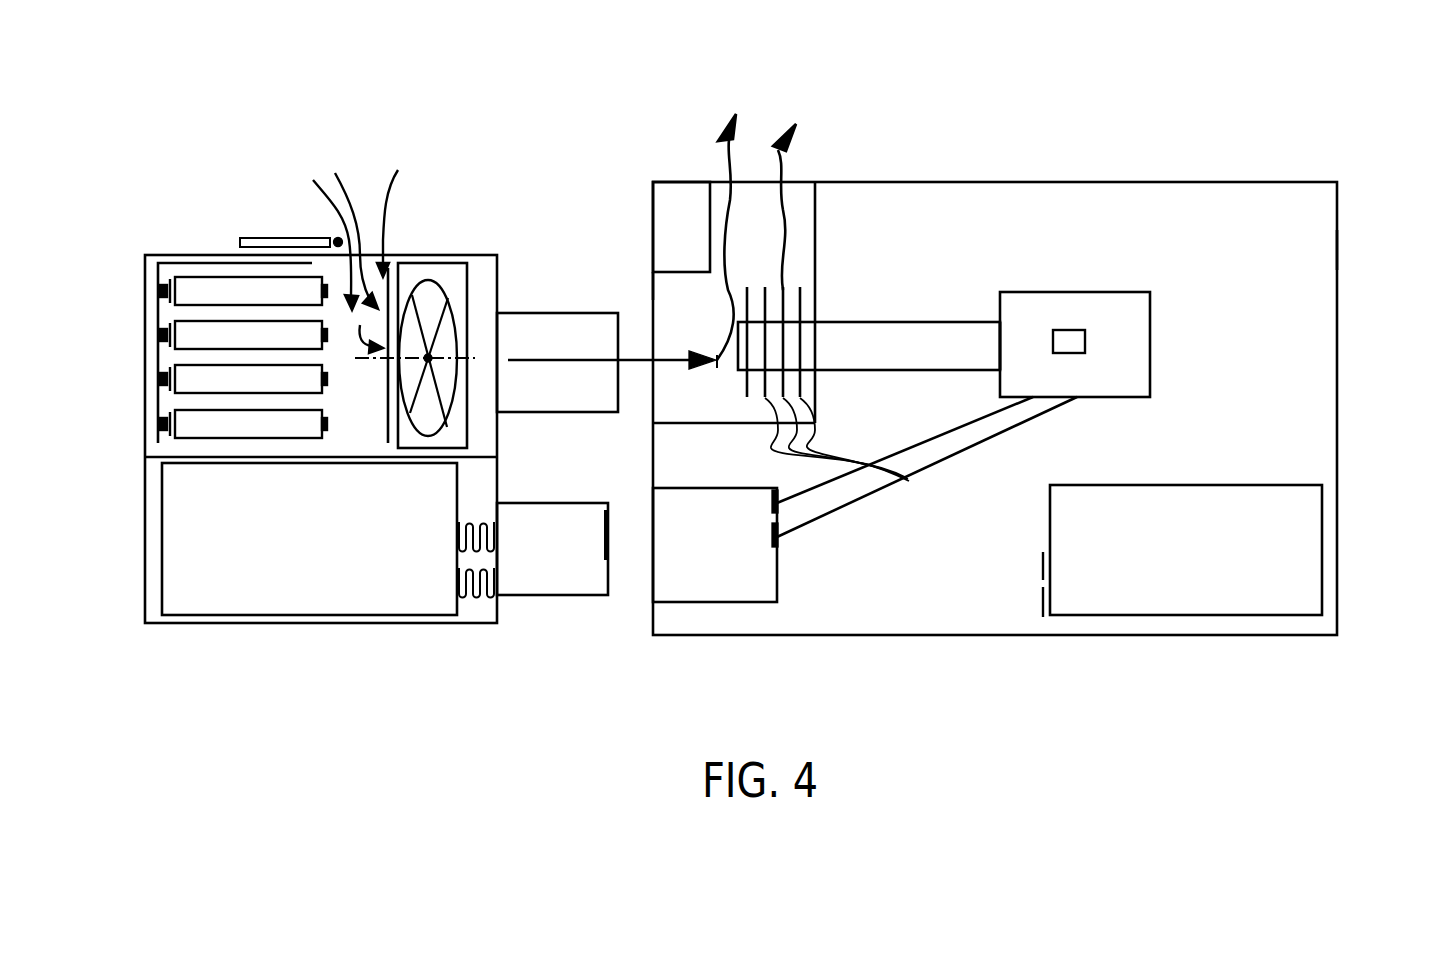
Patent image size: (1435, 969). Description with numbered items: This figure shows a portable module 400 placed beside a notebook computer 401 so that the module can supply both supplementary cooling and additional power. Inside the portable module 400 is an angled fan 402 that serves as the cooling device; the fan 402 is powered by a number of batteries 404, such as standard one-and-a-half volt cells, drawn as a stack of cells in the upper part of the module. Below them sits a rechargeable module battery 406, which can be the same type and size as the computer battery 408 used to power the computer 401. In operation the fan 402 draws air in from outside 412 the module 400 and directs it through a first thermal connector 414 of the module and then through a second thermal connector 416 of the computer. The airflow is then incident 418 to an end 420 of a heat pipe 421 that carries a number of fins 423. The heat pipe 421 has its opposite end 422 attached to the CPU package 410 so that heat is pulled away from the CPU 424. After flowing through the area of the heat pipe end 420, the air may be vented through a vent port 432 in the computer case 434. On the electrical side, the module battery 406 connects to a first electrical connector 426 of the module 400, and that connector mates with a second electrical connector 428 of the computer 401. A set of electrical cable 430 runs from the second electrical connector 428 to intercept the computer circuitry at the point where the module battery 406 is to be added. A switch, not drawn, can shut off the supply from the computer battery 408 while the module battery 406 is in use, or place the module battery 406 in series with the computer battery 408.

The portable module 400 is at (191, 677).
The computer 401 is at (1314, 673).
The angled fan 402 is at (441, 268).
The batteries 404 is at (195, 333).
The module battery 406 is at (315, 598).
The computer battery 408 is at (1090, 596).
The CPU package 410 is at (1065, 292).
The outside 412 is at (410, 160).
The first thermal connector 414 is at (517, 312).
The second thermal connector 416 is at (647, 288).
The incident airflow 418 is at (717, 365).
The heat pipe end 420 is at (850, 323).
The heat pipe 421 is at (915, 333).
The opposite end 422 is at (988, 317).
The fins 423 is at (907, 478).
The CPU 424 is at (1085, 340).
The first electrical connector 426 is at (520, 602).
The second electrical connector 428 is at (745, 605).
The electrical cable 430 is at (870, 505).
The vent port 432 is at (743, 178).
The computer case 434 is at (1337, 248).